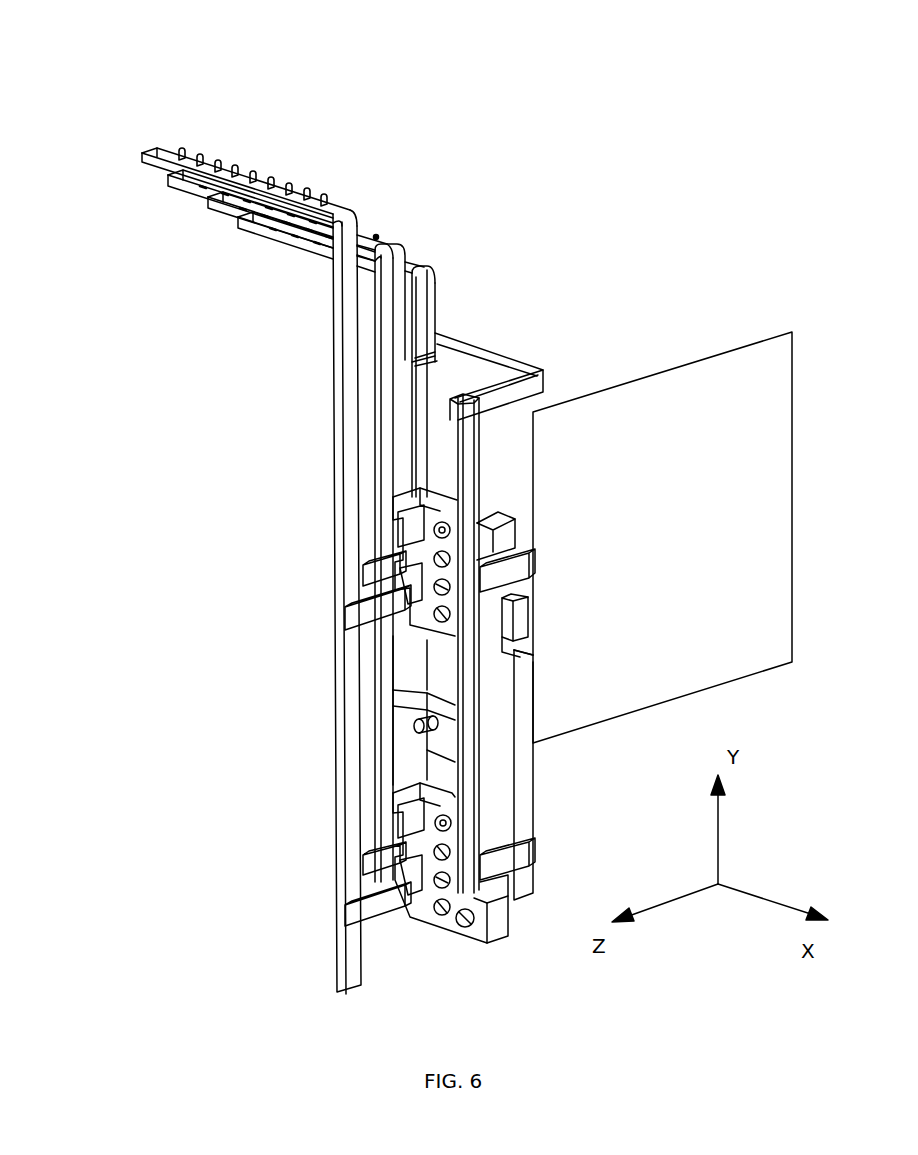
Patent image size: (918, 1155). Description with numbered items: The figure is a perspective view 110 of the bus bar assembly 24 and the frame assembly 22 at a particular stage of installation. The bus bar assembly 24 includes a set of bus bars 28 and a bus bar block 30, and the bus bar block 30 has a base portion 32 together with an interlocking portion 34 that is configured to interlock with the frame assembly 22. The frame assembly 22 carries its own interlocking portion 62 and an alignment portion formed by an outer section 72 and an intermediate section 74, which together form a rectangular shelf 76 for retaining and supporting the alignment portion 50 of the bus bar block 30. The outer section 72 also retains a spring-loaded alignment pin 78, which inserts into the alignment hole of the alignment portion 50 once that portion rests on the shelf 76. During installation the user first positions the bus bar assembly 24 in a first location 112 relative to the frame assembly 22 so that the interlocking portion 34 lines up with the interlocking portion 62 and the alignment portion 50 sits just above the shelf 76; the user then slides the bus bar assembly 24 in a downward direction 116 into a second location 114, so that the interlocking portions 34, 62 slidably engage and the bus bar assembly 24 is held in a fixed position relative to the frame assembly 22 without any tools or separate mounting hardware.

The perspective view 110 is at (741, 78).
The bus bar assembly 24 is at (102, 106).
The bus bars 28 is at (397, 206).
The frame assembly 22 is at (788, 308).
The bus bar block 30 is at (514, 777).
The base portion 32 is at (505, 524).
The interlocking portion 34 is at (528, 638).
The interlocking portion 62 is at (518, 650).
The first location 112 is at (582, 515).
The second location 114 is at (582, 625).
The downward direction 116 is at (561, 590).
The alignment portion 50 is at (425, 684).
The outer section 72 is at (425, 707).
The intermediate section 74 is at (437, 757).
The rectangular shelf 76 is at (433, 667).
The spring-loaded alignment pin 78 is at (416, 729).